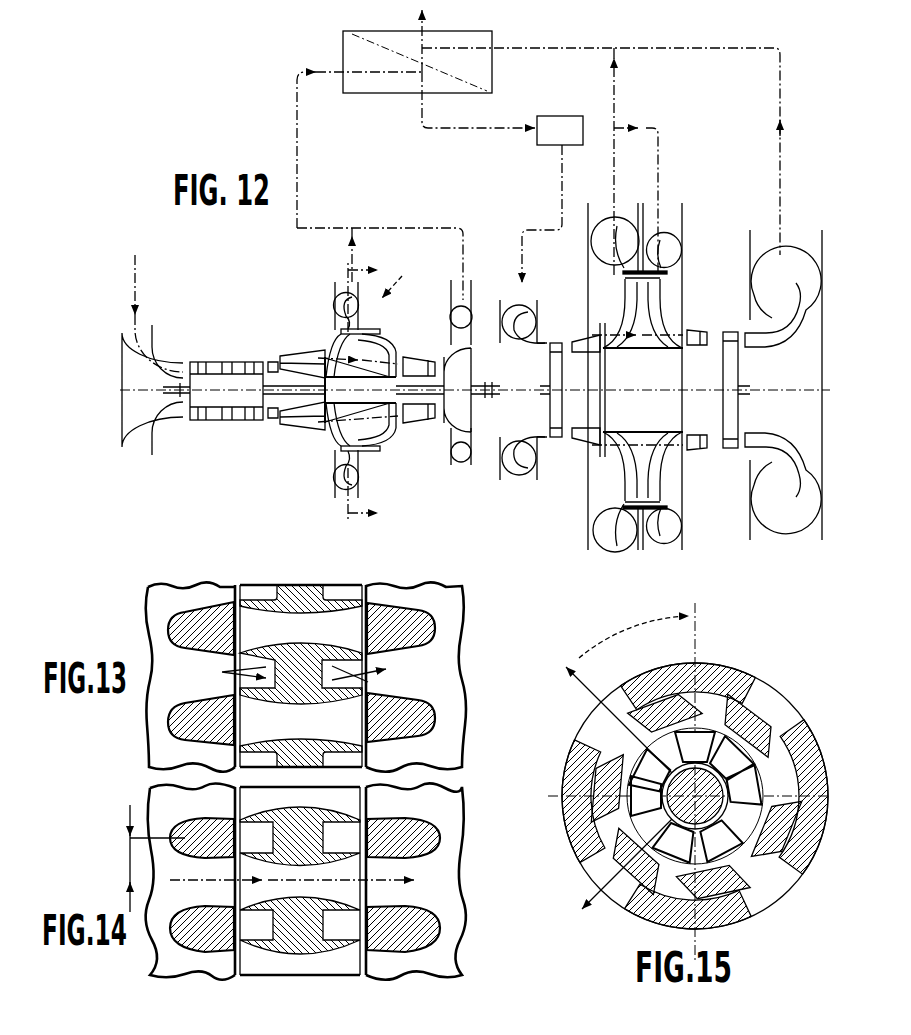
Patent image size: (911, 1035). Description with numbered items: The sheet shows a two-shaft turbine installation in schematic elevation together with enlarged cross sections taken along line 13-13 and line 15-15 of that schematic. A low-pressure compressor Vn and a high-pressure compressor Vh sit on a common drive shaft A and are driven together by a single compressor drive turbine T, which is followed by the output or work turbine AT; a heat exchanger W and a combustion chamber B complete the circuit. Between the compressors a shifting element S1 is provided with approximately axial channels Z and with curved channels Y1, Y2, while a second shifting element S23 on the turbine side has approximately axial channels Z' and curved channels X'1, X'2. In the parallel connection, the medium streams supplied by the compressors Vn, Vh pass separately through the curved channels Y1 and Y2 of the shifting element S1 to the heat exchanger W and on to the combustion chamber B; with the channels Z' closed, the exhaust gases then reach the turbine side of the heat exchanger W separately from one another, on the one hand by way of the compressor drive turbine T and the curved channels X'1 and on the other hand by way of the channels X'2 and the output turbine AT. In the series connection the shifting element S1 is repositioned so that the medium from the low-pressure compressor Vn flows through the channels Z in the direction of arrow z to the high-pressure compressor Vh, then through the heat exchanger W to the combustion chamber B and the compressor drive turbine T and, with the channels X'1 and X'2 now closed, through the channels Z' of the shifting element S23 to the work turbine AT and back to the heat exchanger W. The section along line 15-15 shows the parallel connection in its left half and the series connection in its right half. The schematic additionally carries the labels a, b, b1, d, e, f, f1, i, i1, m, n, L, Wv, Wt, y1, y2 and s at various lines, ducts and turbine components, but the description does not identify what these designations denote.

In FIG. 12, the air inlet a is at (150, 351).
In FIG. 12, the inlet guide vane b is at (293, 424).
In FIG. 12, the compressor delivery line b1 is at (350, 238).
In FIG. 15, the compressor delivery line b1 is at (766, 699).
In FIG. 12, the connecting line d is at (405, 226).
In FIG. 12, the control signal line e is at (458, 132).
In FIG. 12, the fuel/control line f is at (560, 160).
In FIG. 12, the outlet guide vane f1 is at (700, 455).
In FIG. 12, the signal line i is at (613, 156).
In FIG. 12, the turbine inlet scroll i1 is at (590, 440).
In FIG. 12, the signal line m is at (563, 48).
In FIG. 12, the speed signal n is at (420, 20).
In FIG. 12, the load signal line L is at (710, 48).
In FIG. 12, the heat exchanger W is at (422, 72).
In FIG. 12, the control input Wv is at (346, 58).
In FIG. 12, the control characteristic Wt is at (482, 38).
In FIG. 12, the combustion chamber B is at (560, 130).
In FIG. 12, the low-pressure compressor Vn is at (225, 380).
In FIG. 12, the high-pressure compressor Vh is at (453, 408).
In FIG. 12, the common drive shaft A is at (373, 404).
In FIG. 12, the shifting element S1 is at (337, 422).
In FIG. 13, the shifting element S1 is at (301, 752).
In FIG. 14, the shifting element S1 is at (298, 810).
In FIG. 15, the shifting element S1 is at (693, 700).
In FIG. 12, the shifting element S23 is at (628, 349).
In FIG. 12, the compressor drive turbine T is at (558, 343).
In FIG. 12, the output turbine AT is at (733, 333).
In FIG. 12, the curved channels X'1 is at (601, 384).
In FIG. 12, the curved channels X'2 is at (677, 388).
In FIG. 13, the curved channels Y1 is at (252, 683).
In FIG. 14, the curved channels Y1 is at (253, 833).
In FIG. 15, the curved channels Y1 is at (620, 744).
In FIG. 13, the curved channels Y2 is at (333, 679).
In FIG. 14, the curved channels Y2 is at (341, 830).
In FIG. 12, the axial channels Z is at (354, 390).
In FIG. 13, the axial channels Z is at (301, 663).
In FIG. 14, the axial channels Z is at (296, 903).
In FIG. 15, the axial channels Z is at (676, 779).
In FIG. 12, the axial channels Z' is at (665, 364).
In FIG. 12, the first flow passage y1 is at (341, 342).
In FIG. 12, the second flow passage y2 is at (373, 340).
In FIG. 14, the blade pitch / angle s is at (153, 858).
In FIG. 15, the blade pitch / angle s is at (627, 762).
In FIG. 14, the arrow z is at (298, 880).
In FIG. 12, the line 13- 13 is at (300, 366).
In FIG. 12, the line 15- 15 is at (351, 396).